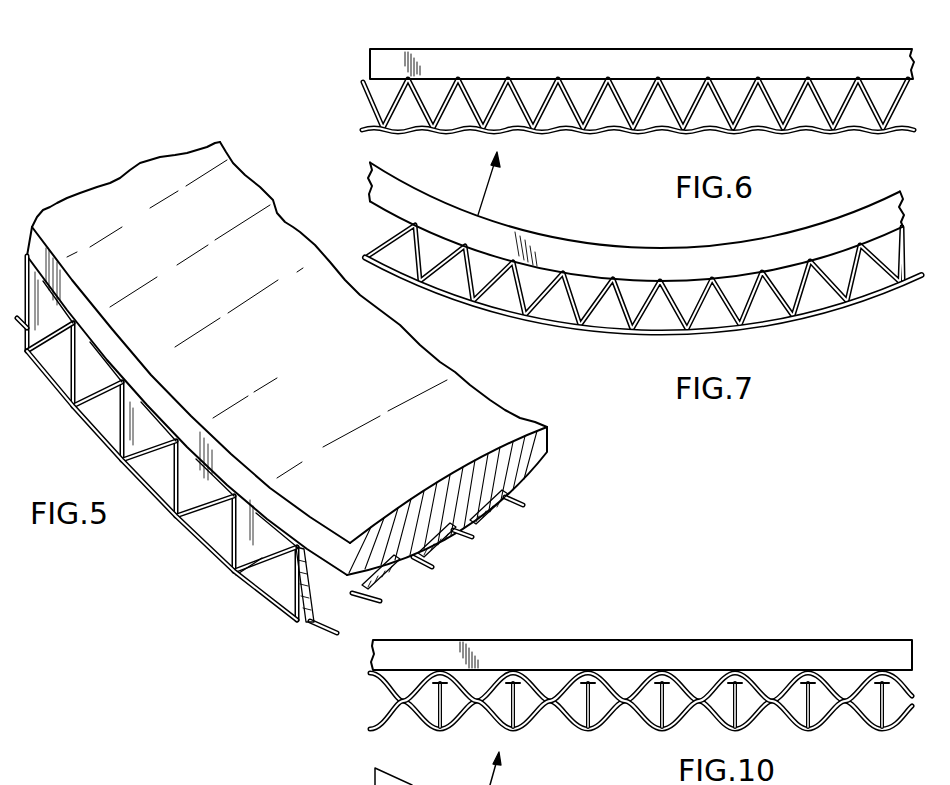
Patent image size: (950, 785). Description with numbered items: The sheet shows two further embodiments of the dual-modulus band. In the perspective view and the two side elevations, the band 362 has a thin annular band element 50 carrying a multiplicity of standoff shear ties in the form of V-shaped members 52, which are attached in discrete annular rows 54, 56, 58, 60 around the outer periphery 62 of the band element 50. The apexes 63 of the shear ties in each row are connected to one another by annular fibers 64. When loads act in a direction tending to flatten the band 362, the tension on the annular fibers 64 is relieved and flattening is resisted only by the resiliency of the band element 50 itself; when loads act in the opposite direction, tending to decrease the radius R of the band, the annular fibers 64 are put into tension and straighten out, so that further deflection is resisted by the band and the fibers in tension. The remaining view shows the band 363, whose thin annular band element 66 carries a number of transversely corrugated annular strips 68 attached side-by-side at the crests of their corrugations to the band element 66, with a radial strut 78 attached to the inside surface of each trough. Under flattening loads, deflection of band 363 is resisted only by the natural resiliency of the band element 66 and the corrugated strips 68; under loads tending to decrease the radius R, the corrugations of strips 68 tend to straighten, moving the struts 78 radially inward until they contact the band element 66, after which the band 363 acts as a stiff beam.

In FIG. 5, the dual-modulus band 362 is at (513, 405).
In FIG. 6, the dual-modulus band 362 is at (440, 50).
In FIG. 7, the dual-modulus band 362 is at (453, 204).
In FIG. 10, the dual-modulus band 363 is at (552, 641).
In FIG. 5, the band element 50 is at (549, 440).
In FIG. 6, the band element 50 is at (658, 48).
In FIG. 7, the band element 50 is at (655, 247).
In FIG. 5, the V-shaped members 52 is at (232, 538).
In FIG. 6, the V-shaped members 52 is at (374, 88).
In FIG. 7, the V-shaped members 52 is at (573, 305).
In FIG. 5, the annular row 54 is at (330, 607).
In FIG. 5, the annular row 56 is at (385, 577).
In FIG. 5, the annular row 58 is at (432, 543).
In FIG. 5, the annular row 60 is at (478, 508).
In FIG. 7, the outer periphery 62 is at (386, 210).
In FIG. 5, the apexes 63 is at (241, 577).
In FIG. 5, the annular fibers 64 is at (287, 598).
In FIG. 6, the annular fibers 64 is at (624, 134).
In FIG. 7, the annular fibers 64 is at (651, 334).
In FIG. 10, the band element 66 is at (673, 640).
In FIG. 10, the corrugated annular strips 68 is at (527, 730).
In FIG. 10, the radial strut 78 is at (435, 712).
In FIG. 7, the radius R is at (493, 195).